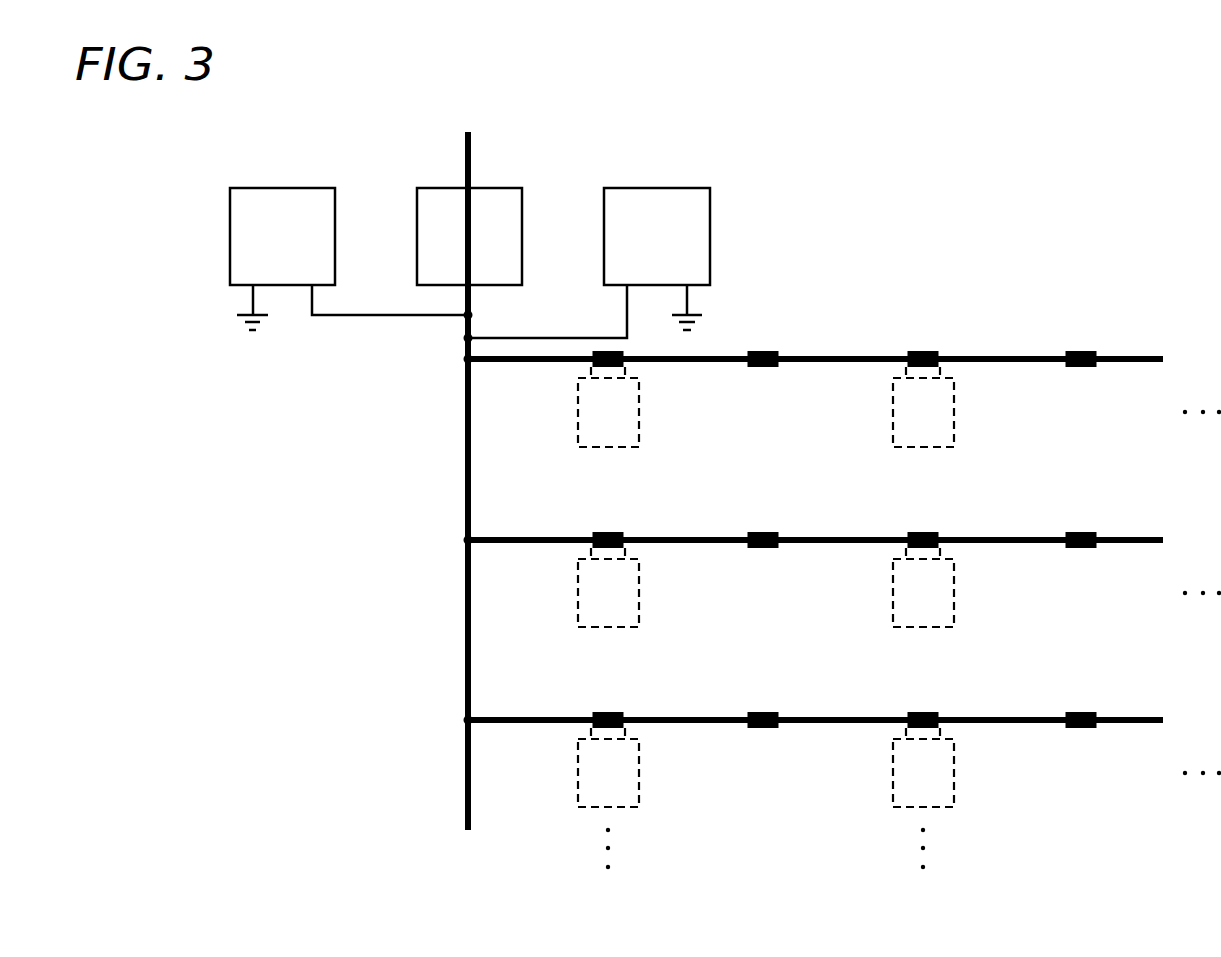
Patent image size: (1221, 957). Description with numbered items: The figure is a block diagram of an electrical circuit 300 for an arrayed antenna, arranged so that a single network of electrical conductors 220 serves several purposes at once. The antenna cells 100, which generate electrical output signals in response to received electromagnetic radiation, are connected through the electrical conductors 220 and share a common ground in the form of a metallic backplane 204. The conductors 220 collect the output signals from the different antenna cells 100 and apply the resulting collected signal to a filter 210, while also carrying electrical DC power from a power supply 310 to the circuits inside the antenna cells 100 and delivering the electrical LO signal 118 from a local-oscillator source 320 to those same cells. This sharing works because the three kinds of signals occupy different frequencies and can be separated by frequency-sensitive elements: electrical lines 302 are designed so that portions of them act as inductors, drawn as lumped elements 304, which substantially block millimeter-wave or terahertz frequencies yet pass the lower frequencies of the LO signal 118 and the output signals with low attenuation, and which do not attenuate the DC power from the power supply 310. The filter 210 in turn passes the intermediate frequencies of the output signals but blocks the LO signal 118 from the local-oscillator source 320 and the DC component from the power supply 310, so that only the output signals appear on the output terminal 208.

The electrical circuit 300 is at (158, 124).
The power supply 310 is at (275, 188).
The filter 210 is at (497, 188).
The local-oscillator source 320 is at (650, 188).
The output terminal 208 is at (464, 149).
The electrical LO signal 118 is at (566, 338).
The backplane 204 is at (240, 316).
The electrical conductors 220 is at (465, 451).
The electrical lines 302 is at (857, 365).
The inductors 304 is at (773, 351).
The antenna cells 100 is at (662, 435).